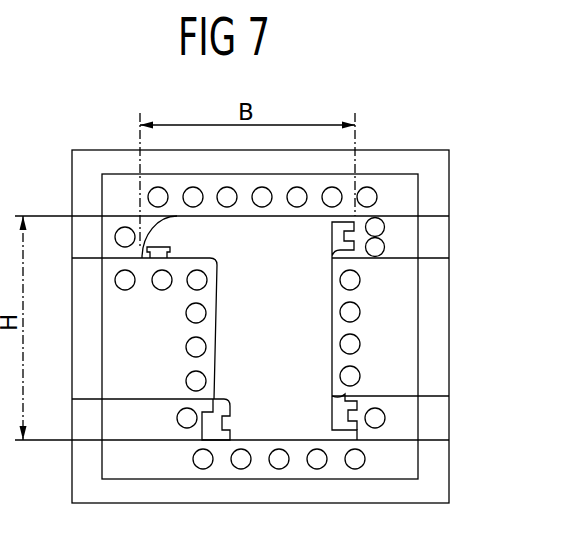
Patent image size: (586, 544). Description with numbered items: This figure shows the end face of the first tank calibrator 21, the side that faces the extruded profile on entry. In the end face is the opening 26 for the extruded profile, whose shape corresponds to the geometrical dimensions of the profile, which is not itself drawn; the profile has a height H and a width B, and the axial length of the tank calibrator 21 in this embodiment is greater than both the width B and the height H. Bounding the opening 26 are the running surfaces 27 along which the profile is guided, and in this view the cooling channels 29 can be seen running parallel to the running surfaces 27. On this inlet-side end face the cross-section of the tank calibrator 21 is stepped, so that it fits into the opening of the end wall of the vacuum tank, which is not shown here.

The tank calibrator 21 is at (459, 443).
The opening 26 is at (292, 341).
The running surfaces 27 is at (217, 296).
The cooling channels 29 is at (384, 244).